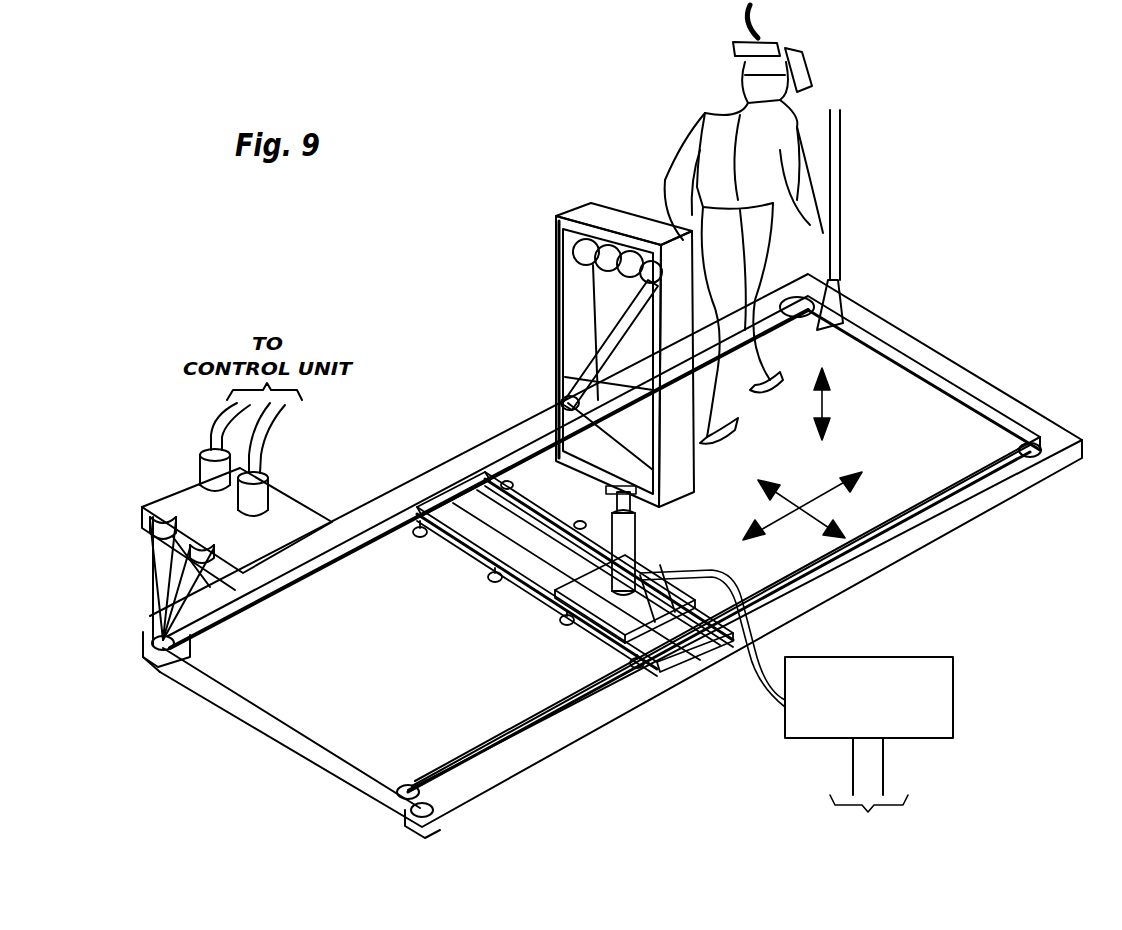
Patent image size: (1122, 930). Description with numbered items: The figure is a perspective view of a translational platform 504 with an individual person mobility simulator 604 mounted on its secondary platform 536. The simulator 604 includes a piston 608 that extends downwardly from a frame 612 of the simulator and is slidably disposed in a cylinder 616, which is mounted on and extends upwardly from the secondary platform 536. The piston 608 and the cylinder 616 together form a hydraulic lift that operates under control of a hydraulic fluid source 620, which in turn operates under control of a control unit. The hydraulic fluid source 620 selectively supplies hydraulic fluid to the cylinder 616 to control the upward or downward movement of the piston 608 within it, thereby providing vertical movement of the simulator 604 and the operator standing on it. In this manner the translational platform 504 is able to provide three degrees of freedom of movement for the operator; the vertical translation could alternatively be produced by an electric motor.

The translational platform 504 is at (1012, 378).
The secondary platform 536 is at (597, 640).
The simulator 604 is at (530, 266).
The piston 608 is at (606, 492).
The frame 612 is at (556, 328).
The cylinder 616 is at (640, 535).
The hydraulic fluid source 620 is at (953, 710).